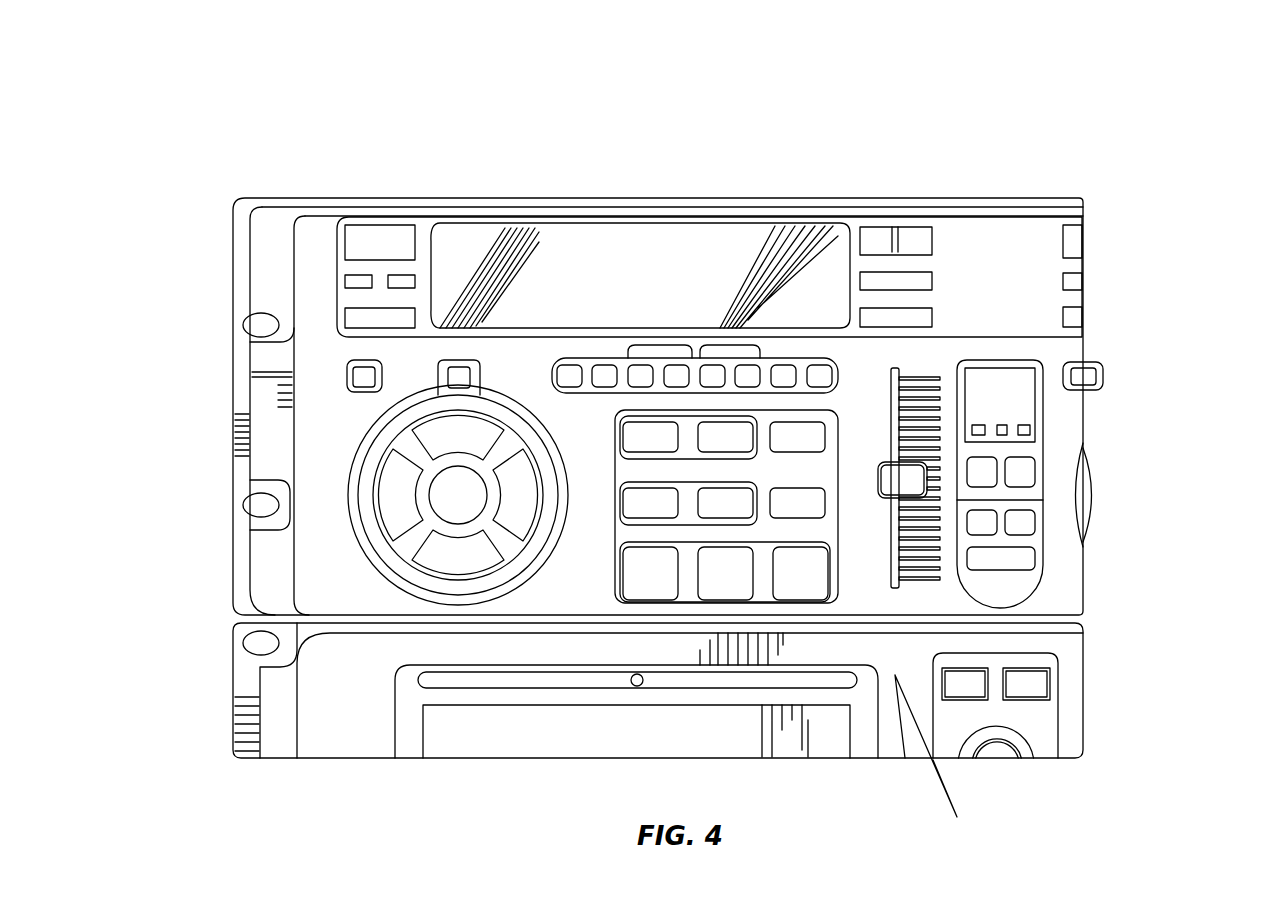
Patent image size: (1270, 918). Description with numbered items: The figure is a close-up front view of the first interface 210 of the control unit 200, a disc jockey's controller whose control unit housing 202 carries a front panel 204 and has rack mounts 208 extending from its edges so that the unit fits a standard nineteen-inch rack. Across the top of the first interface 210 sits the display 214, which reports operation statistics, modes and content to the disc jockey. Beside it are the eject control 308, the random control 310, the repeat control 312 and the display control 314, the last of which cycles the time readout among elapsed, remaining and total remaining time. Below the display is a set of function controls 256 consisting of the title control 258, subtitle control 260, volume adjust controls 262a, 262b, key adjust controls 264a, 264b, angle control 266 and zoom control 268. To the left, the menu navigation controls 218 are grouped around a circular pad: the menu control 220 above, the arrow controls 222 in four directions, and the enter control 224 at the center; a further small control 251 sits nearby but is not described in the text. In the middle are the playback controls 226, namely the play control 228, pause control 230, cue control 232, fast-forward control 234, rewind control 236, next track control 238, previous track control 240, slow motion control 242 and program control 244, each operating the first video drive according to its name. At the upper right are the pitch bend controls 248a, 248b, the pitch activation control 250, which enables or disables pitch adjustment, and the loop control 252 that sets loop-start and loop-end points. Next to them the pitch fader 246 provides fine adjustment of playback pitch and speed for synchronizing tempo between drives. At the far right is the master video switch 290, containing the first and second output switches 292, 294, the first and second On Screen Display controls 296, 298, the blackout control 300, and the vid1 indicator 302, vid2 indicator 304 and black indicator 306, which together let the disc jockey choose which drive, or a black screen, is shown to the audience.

The control unit 200 is at (170, 104).
The control unit housing 202 is at (523, 212).
The front panel 204 is at (345, 617).
The rack mounts 208 is at (249, 412).
The first interface 210 is at (553, 592).
The display 214 is at (457, 240).
The menu navigation controls 218 is at (378, 562).
The menu control 220 is at (460, 378).
The arrow controls 222 is at (450, 425).
The enter control 224 is at (453, 495).
The playback controls 226 is at (848, 604).
The play control 228 is at (800, 572).
The pause control 230 is at (720, 578).
The cue control 232 is at (645, 578).
The fast-forward control 234 is at (725, 437).
The rewind control 236 is at (650, 437).
The next track control 238 is at (650, 503).
The previous track control 240 is at (725, 503).
The slow motion control 242 is at (797, 503).
The program control 244 is at (797, 437).
The pitch fader 246 is at (907, 483).
The pitch bend control 248a is at (880, 237).
The pitch bend control 248b is at (918, 237).
The pitch activation control 250 is at (925, 280).
The small button 251 is at (365, 378).
The loop control 252 is at (920, 312).
The function controls 256 is at (828, 83).
The title function control 258 is at (569, 365).
The subtitle function control 260 is at (604, 365).
The volume adjust control 262a is at (641, 365).
The volume adjust control 262b is at (677, 365).
The key adjust control 264a is at (712, 365).
The key adjust control 264b is at (748, 365).
The angle function control 266 is at (784, 365).
The zoom function control 268 is at (819, 365).
The master video switch 290 is at (1052, 592).
The first output switch 292 is at (985, 520).
The second output switch 294 is at (1023, 523).
The first On Screen Display control 296 is at (985, 465).
The second On Screen Display control 298 is at (1023, 475).
The blackout control 300 is at (1035, 560).
The vid1 indicator 302 is at (1030, 341).
The vid2 indicator 304 is at (1027, 428).
The black indicator 306 is at (985, 427).
The eject control 308 is at (365, 246).
The random control 310 is at (360, 283).
The repeat control 312 is at (403, 282).
The display control 314 is at (360, 320).